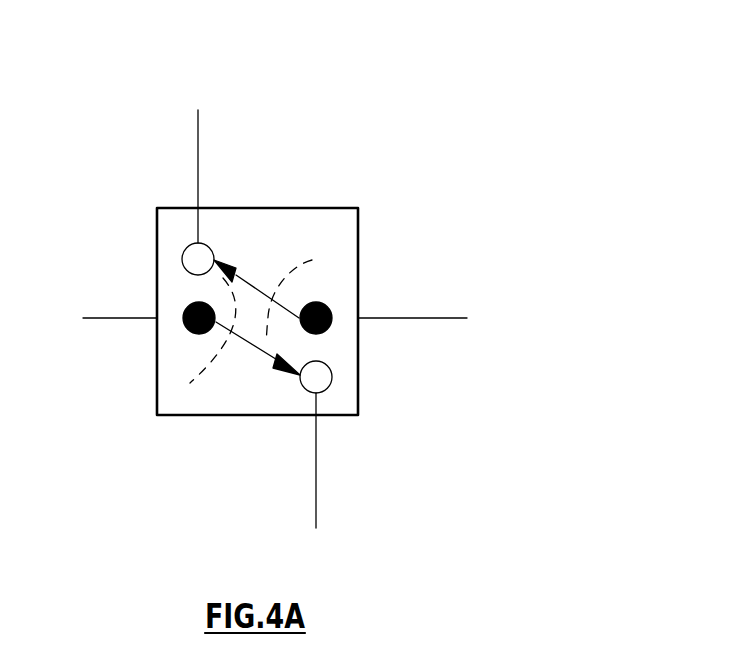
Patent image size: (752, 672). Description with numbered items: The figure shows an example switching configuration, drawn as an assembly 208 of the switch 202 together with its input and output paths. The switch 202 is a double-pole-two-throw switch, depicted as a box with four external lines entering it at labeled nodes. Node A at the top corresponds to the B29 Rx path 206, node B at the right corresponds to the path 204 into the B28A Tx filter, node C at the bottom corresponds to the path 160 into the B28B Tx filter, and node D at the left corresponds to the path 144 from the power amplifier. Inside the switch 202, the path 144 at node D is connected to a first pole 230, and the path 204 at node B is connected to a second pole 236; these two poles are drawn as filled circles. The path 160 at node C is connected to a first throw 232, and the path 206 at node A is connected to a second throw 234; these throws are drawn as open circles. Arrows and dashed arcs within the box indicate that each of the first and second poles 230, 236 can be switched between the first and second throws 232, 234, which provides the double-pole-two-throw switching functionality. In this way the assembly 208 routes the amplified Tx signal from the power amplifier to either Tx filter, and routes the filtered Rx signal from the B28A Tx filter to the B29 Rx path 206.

The assembly 208 is at (327, 62).
The switch 202 is at (297, 207).
The B29 Rx path 206 is at (197, 138).
The path from the PA 144 is at (121, 319).
The path into the B28A Tx filter 204 is at (415, 319).
The path into the B28B Tx filter 160 is at (314, 488).
The second throw 234 is at (186, 251).
The first pole 230 is at (187, 308).
The second pole 236 is at (328, 305).
The first throw 232 is at (332, 378).